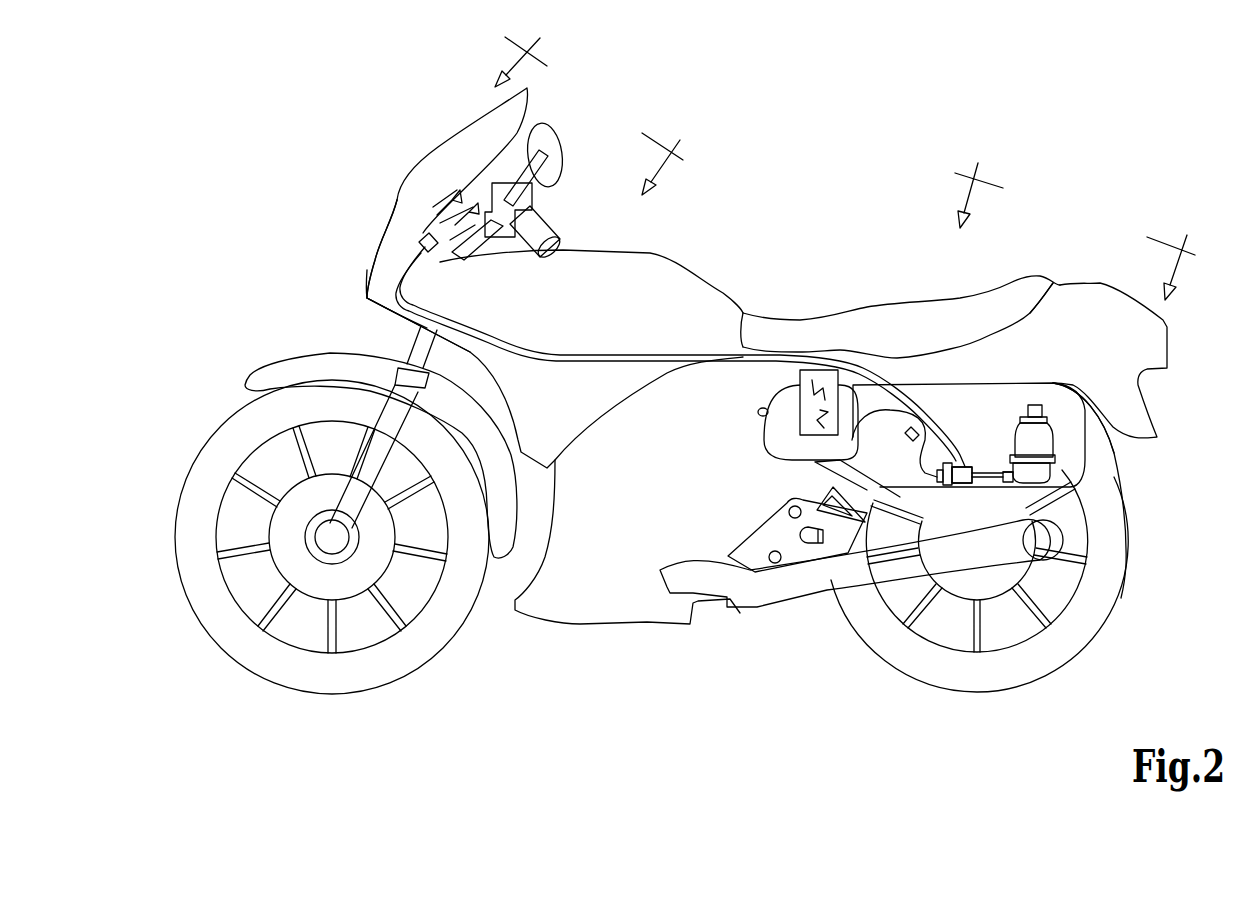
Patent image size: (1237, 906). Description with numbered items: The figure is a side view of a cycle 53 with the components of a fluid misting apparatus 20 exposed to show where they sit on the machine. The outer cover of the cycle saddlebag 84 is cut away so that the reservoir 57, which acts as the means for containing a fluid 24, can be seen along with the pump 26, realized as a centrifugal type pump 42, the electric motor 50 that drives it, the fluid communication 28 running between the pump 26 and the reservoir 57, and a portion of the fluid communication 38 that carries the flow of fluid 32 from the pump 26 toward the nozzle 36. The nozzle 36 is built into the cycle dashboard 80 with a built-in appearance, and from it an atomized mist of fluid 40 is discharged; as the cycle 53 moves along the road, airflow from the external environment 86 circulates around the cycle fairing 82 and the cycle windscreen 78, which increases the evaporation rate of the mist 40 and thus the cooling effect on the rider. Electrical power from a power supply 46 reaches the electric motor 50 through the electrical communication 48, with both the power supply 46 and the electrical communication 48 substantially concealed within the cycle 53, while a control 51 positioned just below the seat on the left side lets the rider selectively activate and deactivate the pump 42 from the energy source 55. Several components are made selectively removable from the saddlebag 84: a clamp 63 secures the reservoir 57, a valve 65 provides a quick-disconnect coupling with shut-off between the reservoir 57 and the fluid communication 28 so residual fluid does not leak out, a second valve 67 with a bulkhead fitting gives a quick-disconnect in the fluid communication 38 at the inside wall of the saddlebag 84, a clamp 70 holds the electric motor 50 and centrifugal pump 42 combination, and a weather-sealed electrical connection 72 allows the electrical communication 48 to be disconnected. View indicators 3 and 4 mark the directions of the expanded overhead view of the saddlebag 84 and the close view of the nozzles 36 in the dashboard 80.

The section line 3- 3 is at (1076, 217).
The section line 4- 4 is at (592, 102).
The fluid misting apparatus 20 is at (1163, 488).
The means for containing a fluid 24 is at (1127, 560).
The pump 26 is at (995, 290).
The fluid communication between pump and means for containing a fluid 28 is at (993, 473).
The flow of fluid 32 is at (690, 342).
The nozzle 36 is at (427, 233).
The fluid communication between nozzle and pump 38 is at (585, 330).
The atomized mist of fluid 40 is at (499, 166).
The centrifugal type pump 42 is at (968, 467).
The power supply 46 is at (830, 370).
The electrical communication between power supply and electric motor 48 is at (746, 380).
The electric motor 50 is at (940, 487).
The control 51 is at (758, 413).
The cycle 53 is at (210, 432).
The energy source 55 is at (866, 352).
The reservoir 57 is at (1043, 433).
The reservoir clamp 63 is at (1057, 458).
The valve 65 is at (1045, 512).
The valve 67 is at (915, 433).
The pump clamp 70 is at (943, 485).
The electrical connection 72 is at (833, 477).
The cycle windscreen 78 is at (457, 143).
The cycle dashboard 80 is at (418, 243).
The cycle fairing 82 is at (373, 283).
The cycle saddlebag 84 is at (1037, 383).
The external environment 86 is at (246, 141).